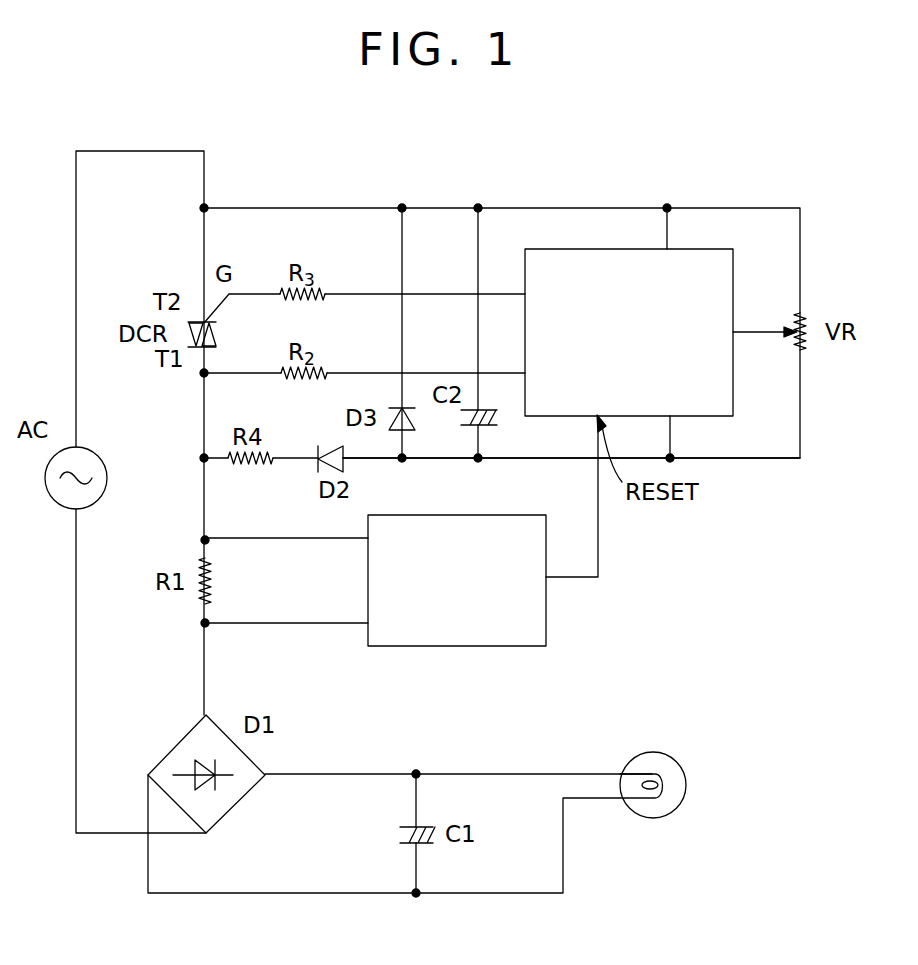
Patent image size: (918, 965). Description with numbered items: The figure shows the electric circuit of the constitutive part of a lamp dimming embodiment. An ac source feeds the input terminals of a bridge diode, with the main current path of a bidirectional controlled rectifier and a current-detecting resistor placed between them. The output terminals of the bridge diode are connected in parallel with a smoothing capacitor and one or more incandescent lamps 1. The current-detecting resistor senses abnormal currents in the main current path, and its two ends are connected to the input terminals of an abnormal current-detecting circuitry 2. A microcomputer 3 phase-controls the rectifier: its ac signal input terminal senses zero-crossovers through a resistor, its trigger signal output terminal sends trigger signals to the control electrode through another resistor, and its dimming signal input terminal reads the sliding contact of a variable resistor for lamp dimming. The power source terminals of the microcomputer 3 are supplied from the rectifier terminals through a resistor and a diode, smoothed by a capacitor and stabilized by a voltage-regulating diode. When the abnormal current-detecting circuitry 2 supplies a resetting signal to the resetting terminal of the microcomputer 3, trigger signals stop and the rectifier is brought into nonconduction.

The incandescent lamp 1 is at (684, 762).
The abnormal current-detecting circuitry 2 is at (546, 610).
The microcomputer 3 is at (733, 255).